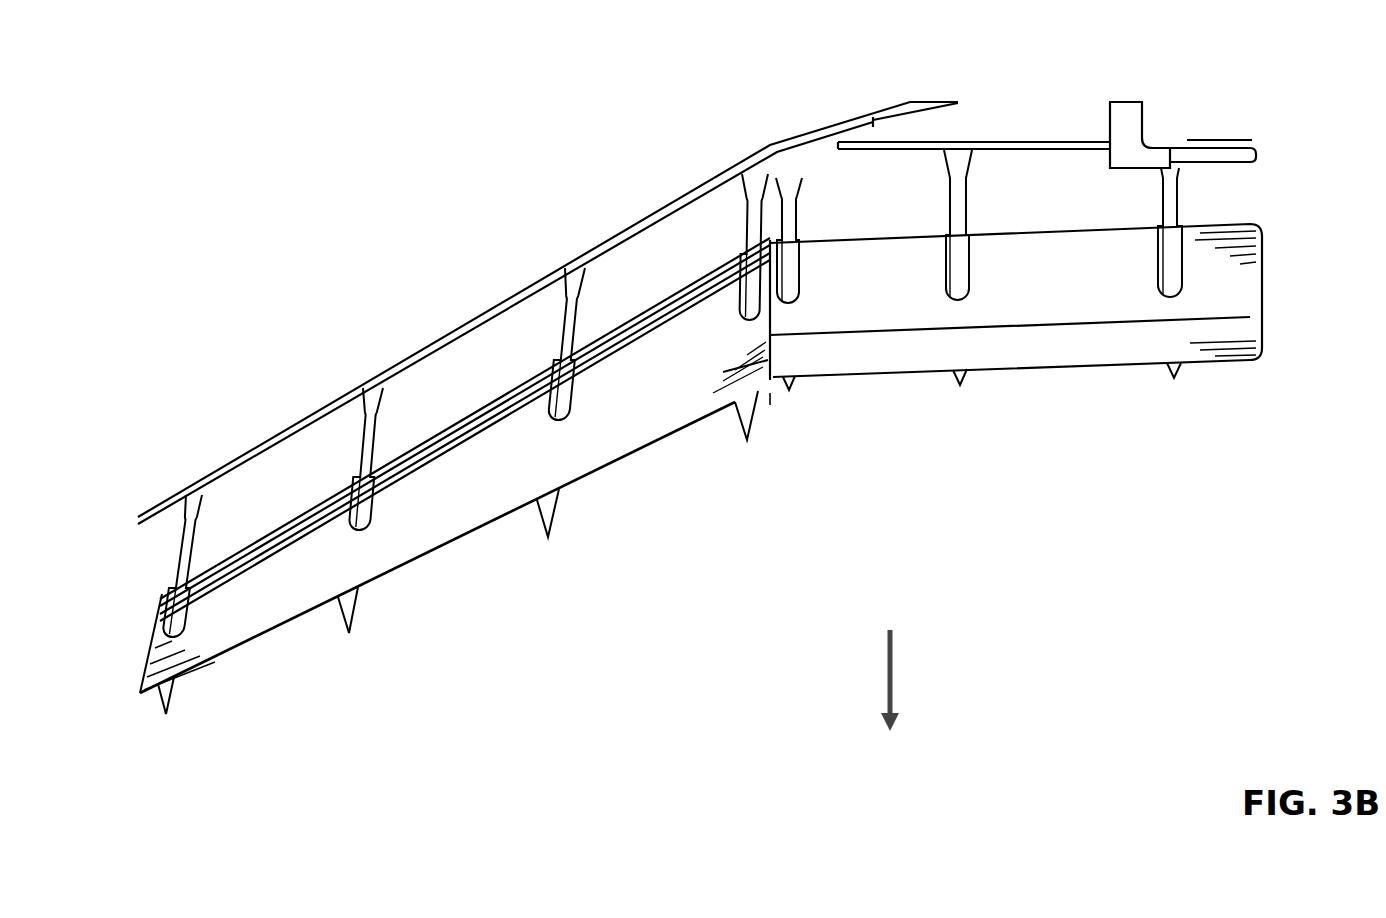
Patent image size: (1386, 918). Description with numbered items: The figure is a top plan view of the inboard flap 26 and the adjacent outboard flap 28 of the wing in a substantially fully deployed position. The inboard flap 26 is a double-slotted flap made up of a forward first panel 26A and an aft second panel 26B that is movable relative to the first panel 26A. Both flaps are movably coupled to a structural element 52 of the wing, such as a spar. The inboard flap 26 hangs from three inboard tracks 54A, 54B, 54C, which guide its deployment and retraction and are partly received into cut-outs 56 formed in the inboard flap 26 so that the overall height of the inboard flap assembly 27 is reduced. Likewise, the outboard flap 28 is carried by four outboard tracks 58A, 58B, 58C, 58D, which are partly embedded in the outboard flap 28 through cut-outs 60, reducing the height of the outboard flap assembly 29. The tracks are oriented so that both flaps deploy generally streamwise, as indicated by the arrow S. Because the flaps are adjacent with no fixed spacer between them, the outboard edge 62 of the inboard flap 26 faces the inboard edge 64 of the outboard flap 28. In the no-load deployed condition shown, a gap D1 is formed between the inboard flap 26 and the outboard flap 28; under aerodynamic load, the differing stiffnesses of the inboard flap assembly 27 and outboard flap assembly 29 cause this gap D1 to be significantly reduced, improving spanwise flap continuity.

The inboard flap 26 is at (1049, 335).
The first panel 26A is at (1083, 309).
The second panel 26B is at (1055, 347).
The inboard flap assembly 27 is at (1138, 406).
The outboard flap 28 is at (483, 478).
The outboard flap assembly 29 is at (505, 568).
The structural element 52 is at (447, 342).
The inboard track 54A is at (797, 223).
The inboard track 54B is at (958, 222).
The inboard track 54C is at (1172, 223).
The cut-outs 56 is at (953, 332).
The outboard track 58A is at (186, 544).
The outboard track 58B is at (367, 438).
The outboard track 58C is at (562, 341).
The outboard track 58D is at (757, 221).
The cut-outs 60 is at (341, 551).
The outboard edge 62 is at (790, 376).
The inboard edge 64 is at (750, 368).
The gap D1 is at (770, 405).
The streamwise direction arrow S is at (893, 672).